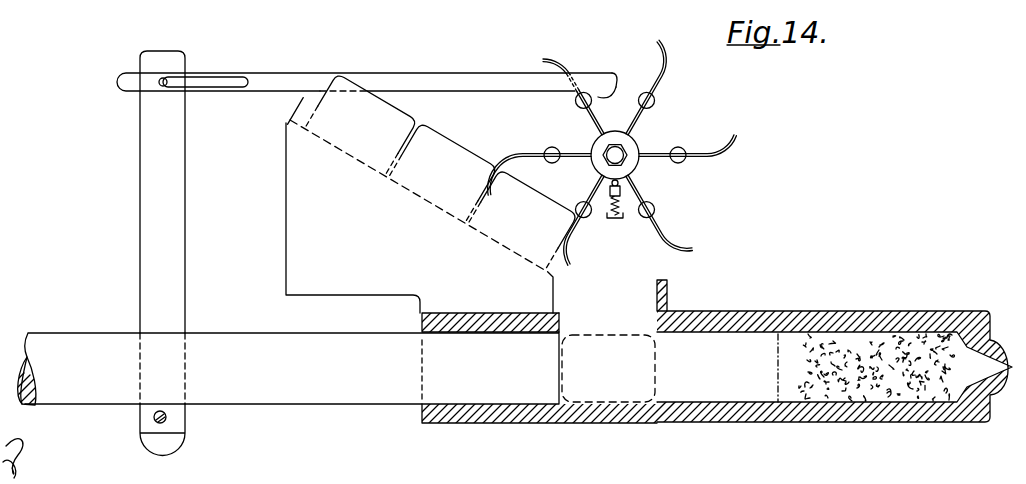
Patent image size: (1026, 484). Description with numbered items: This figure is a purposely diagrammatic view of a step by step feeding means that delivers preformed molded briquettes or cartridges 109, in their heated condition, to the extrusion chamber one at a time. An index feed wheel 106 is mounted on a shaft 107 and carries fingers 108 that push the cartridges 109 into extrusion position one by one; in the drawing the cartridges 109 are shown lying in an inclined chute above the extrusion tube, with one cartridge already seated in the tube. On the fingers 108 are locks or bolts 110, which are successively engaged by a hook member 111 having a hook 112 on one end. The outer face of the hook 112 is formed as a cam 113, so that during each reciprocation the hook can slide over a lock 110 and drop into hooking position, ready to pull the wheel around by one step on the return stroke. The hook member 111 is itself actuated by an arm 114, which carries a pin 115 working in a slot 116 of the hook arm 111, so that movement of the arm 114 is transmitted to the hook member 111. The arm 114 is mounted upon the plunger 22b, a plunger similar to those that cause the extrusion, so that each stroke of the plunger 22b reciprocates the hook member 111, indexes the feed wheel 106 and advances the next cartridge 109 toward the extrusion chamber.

The plunger 22b is at (282, 392).
The index feed wheel 106 is at (637, 138).
The shaft 107 is at (623, 153).
The fingers 108 is at (660, 48).
The cartridges 109 is at (460, 177).
The locks or bolts 110 is at (570, 118).
The hook member 111 is at (394, 80).
The hook 112 is at (601, 92).
The cam 113 is at (614, 84).
The arm 114 is at (146, 169).
The pin 115 is at (160, 86).
The slot 116 is at (229, 66).